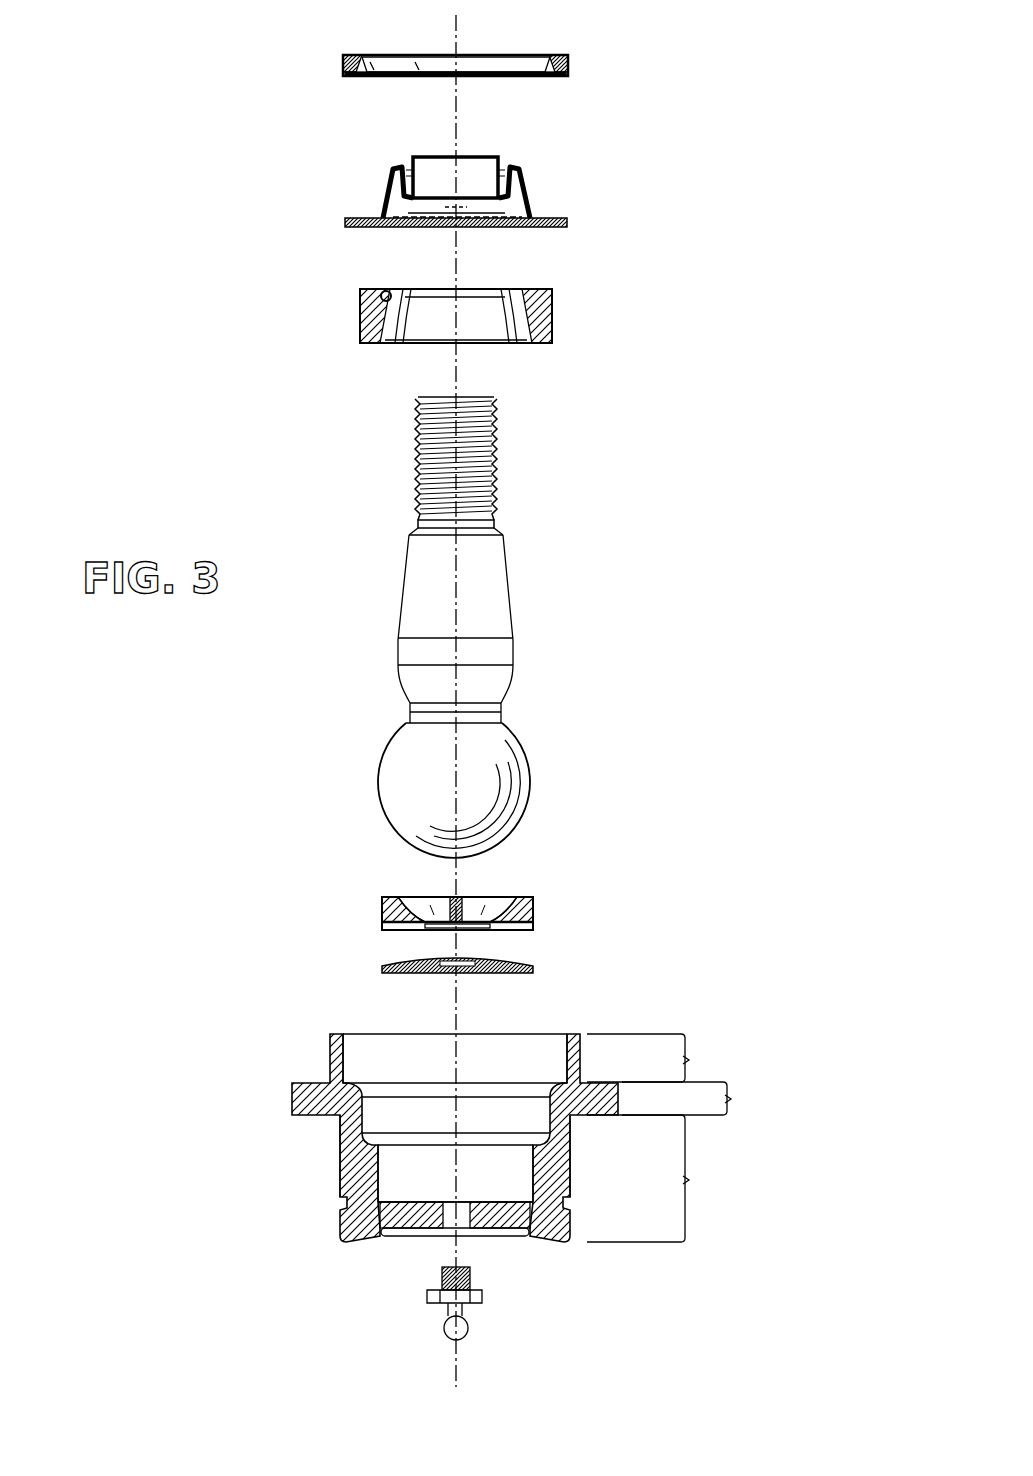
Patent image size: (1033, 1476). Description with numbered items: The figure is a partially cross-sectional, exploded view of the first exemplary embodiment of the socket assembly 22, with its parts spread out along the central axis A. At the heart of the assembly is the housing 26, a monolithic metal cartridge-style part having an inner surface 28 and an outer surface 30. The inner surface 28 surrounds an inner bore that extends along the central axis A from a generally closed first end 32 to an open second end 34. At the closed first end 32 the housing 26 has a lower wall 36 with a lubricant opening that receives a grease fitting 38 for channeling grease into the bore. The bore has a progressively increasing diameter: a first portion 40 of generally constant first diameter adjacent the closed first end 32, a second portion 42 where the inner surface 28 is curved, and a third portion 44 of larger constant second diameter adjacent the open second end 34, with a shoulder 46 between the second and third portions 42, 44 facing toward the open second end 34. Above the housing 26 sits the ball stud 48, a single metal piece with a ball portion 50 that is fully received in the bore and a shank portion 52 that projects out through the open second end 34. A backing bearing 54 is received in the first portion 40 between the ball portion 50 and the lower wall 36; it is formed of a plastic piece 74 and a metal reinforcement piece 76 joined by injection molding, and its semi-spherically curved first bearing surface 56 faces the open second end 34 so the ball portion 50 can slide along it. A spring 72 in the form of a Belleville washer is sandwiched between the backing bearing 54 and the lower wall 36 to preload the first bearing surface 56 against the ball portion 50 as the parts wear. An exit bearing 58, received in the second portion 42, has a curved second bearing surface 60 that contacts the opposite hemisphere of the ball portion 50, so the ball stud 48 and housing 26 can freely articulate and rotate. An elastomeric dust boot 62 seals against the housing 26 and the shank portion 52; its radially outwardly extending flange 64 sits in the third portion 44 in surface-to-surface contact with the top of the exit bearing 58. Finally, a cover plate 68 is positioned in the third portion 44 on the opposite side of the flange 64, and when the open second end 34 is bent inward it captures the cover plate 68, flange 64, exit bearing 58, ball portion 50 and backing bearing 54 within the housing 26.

The central axis A is at (457, 22).
The socket assembly 22 is at (516, 723).
The housing 26 is at (497, 1146).
The inner surface 28 is at (370, 1150).
The outer surface 30 is at (340, 1132).
The closed first end 32 is at (512, 1200).
The open second end 34 is at (546, 1033).
The lower wall 36 is at (410, 1216).
The grease fitting 38 is at (470, 1330).
The first portion 40 is at (655, 1178).
The second portion 42 is at (692, 1098).
The third portion 44 is at (654, 1058).
The shoulder 46 is at (332, 1047).
The ball stud 48 is at (489, 627).
The ball portion 50 is at (512, 787).
The shank portion 52 is at (418, 605).
The backing bearing 54 is at (465, 884).
The first bearing surface 56 is at (404, 897).
The exit bearing 58 is at (553, 316).
The second bearing surface 60 is at (386, 294).
The dust boot 62 is at (527, 186).
The flange 64 is at (546, 218).
The cover plate 68 is at (569, 66).
The spring 72 is at (506, 962).
The plastic piece 74 is at (519, 898).
The reinforcement piece 76 is at (381, 918).